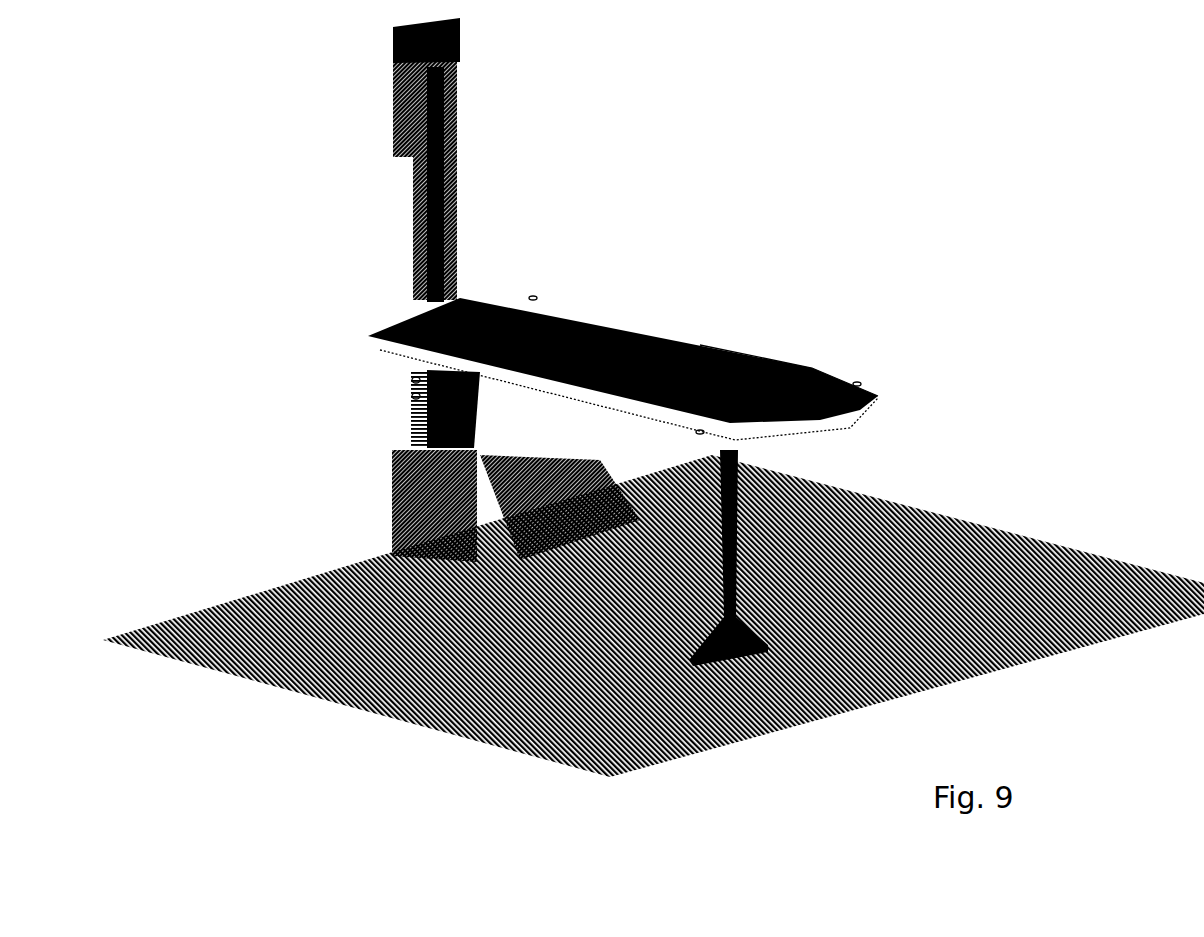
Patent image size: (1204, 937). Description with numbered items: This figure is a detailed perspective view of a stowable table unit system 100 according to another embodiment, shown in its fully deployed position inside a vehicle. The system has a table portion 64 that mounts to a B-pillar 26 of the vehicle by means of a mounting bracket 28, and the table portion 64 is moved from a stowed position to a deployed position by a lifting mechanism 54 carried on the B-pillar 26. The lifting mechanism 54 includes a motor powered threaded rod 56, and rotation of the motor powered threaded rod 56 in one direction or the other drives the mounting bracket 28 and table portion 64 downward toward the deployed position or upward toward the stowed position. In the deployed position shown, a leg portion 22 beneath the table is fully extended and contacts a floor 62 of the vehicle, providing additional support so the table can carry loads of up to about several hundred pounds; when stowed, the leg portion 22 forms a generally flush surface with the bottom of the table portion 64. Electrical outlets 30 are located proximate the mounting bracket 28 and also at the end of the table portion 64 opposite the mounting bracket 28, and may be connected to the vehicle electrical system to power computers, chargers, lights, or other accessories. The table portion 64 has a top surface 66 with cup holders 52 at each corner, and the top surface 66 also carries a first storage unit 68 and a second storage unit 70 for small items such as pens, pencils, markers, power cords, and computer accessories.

The stowable table unit system 100 is at (752, 182).
The B-pillar 26 is at (468, 37).
The motor powered threaded rod 56 is at (445, 200).
The second storage unit 70 is at (458, 310).
The cup holders 52 is at (390, 328).
The top surface 66 is at (703, 335).
The first storage unit 68 is at (800, 360).
The table portion 64 is at (870, 400).
The electrical outlets 30 is at (413, 395).
The lifting mechanism 54 is at (400, 415).
The mounting bracket 28 is at (477, 430).
The leg portion 22 is at (720, 580).
The floor 62 is at (1057, 560).